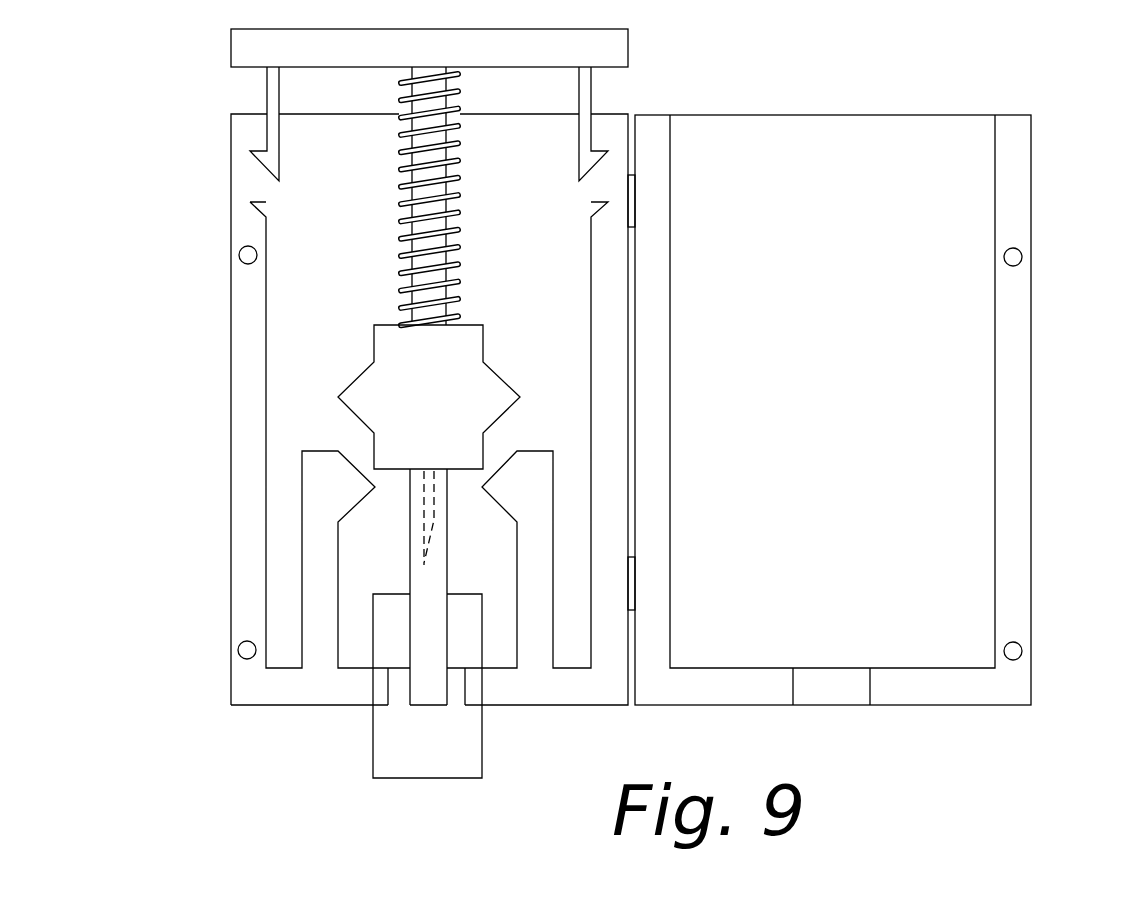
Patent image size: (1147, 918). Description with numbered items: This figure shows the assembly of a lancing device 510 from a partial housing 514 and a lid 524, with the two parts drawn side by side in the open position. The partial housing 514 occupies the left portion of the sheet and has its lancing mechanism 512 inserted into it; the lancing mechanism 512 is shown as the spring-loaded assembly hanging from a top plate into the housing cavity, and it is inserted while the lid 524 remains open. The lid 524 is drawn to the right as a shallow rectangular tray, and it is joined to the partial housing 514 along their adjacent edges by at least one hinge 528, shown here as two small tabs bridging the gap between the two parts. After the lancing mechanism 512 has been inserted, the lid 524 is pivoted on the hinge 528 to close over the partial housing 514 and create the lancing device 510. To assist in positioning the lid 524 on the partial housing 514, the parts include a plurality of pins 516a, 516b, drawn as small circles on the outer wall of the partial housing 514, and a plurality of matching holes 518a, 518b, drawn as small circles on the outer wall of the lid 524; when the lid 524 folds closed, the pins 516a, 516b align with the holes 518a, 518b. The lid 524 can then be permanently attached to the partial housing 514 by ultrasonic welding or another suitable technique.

The lancing device 510 is at (585, 403).
The lancing mechanism 512 is at (366, 200).
The partial housing 514 is at (240, 372).
The pin 516a is at (230, 256).
The pin 516b is at (229, 650).
The hole 518a is at (1029, 257).
The hole 518b is at (1029, 651).
The lid 524 is at (1022, 187).
The hinge 528 is at (632, 192).